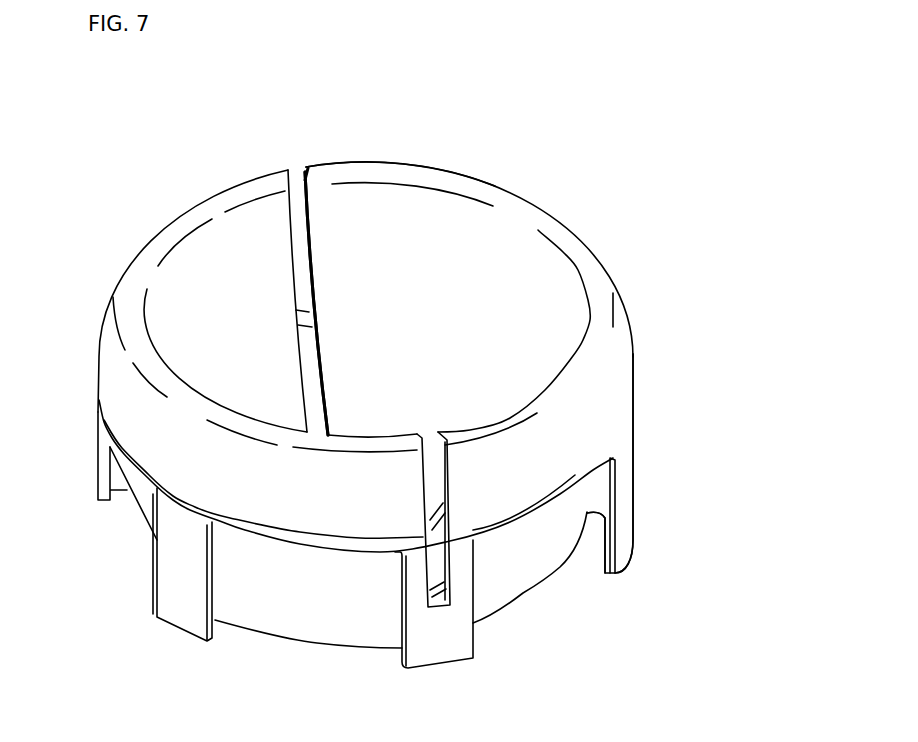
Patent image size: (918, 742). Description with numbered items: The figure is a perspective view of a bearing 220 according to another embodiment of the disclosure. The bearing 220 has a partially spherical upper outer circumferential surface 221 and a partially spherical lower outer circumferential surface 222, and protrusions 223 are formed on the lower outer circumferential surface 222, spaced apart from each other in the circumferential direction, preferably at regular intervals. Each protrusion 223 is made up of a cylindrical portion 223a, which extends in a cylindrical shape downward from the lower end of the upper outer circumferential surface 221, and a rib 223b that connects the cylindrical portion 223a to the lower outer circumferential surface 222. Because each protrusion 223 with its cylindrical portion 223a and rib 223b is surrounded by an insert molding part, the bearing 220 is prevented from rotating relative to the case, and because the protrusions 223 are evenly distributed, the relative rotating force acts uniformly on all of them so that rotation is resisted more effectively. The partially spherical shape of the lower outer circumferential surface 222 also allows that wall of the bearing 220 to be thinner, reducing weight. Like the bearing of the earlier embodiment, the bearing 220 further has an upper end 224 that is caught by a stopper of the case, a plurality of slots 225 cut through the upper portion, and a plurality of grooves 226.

The bearing 220 is at (566, 134).
The upper outer circumferential surface 221 is at (622, 367).
The lower outer circumferential surface 222 is at (523, 575).
The protrusion 223 is at (648, 549).
The cylindrical portion 223a is at (625, 510).
The rib 223b is at (587, 552).
The upper end 224 is at (400, 168).
The slot 225 is at (312, 229).
The groove 226 is at (325, 381).